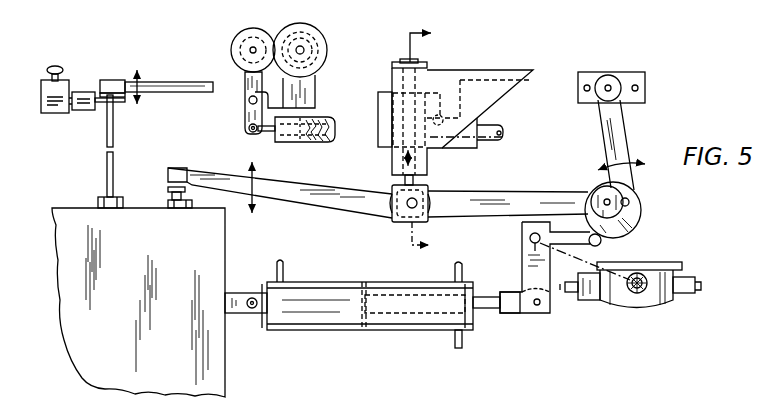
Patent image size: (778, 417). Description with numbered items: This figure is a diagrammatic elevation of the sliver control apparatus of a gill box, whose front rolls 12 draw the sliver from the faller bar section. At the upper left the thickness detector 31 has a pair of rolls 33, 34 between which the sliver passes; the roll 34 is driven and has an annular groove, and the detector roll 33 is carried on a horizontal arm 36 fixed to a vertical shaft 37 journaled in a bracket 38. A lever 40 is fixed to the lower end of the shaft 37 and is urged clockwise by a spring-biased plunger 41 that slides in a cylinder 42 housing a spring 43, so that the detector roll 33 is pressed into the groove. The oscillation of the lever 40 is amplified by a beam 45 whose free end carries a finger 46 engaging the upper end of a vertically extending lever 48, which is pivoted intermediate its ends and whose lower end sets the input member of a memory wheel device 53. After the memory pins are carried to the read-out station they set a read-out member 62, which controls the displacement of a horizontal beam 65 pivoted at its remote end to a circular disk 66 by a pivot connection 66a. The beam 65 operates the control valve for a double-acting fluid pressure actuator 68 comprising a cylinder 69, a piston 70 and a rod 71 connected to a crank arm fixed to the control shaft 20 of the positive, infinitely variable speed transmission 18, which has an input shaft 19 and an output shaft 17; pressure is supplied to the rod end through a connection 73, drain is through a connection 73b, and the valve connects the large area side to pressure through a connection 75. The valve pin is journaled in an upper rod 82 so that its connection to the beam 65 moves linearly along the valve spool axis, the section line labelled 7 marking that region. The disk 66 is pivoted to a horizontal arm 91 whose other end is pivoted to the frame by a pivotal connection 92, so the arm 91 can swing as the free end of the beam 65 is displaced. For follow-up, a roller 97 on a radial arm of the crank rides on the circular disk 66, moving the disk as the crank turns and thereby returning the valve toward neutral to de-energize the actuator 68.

The section line 7- 7 is at (428, 141).
The front rolls 12 is at (494, 407).
The output shaft 17 is at (681, 295).
The positive, infinitely variable speed transmission 18 is at (623, 312).
The input shaft 19 is at (572, 286).
The control shaft 20 is at (645, 278).
The thickness detector 31 is at (276, 32).
The detector roll 33 is at (242, 37).
The roll 34 is at (318, 38).
The horizontal arm 36 is at (246, 73).
The vertical shaft 37 is at (248, 101).
The bracket 38 is at (316, 85).
The lever 40 is at (249, 121).
The spring-biased plunger 41 is at (264, 132).
The cylinder 42 is at (325, 143).
The spring 43 is at (334, 123).
The beam 45 is at (183, 84).
The finger 46 is at (118, 92).
The lever 48 is at (118, 104).
The memory wheel device 53 is at (80, 334).
The read-out member 62 is at (169, 194).
The beam 65 is at (320, 204).
The circular disk 66 is at (628, 230).
The pivot connection 66a is at (600, 186).
The fluid pressure actuator 68 is at (383, 334).
The cylinder 69 is at (449, 331).
The piston 70 is at (364, 282).
The rod 71 is at (488, 296).
The connection 73 is at (465, 343).
The connection 73b is at (463, 271).
The connection 75 is at (285, 273).
The upper rod 82 is at (427, 186).
The horizontal arm 91 is at (622, 140).
The pivotal connection 92 is at (608, 75).
The roller 97 is at (600, 243).